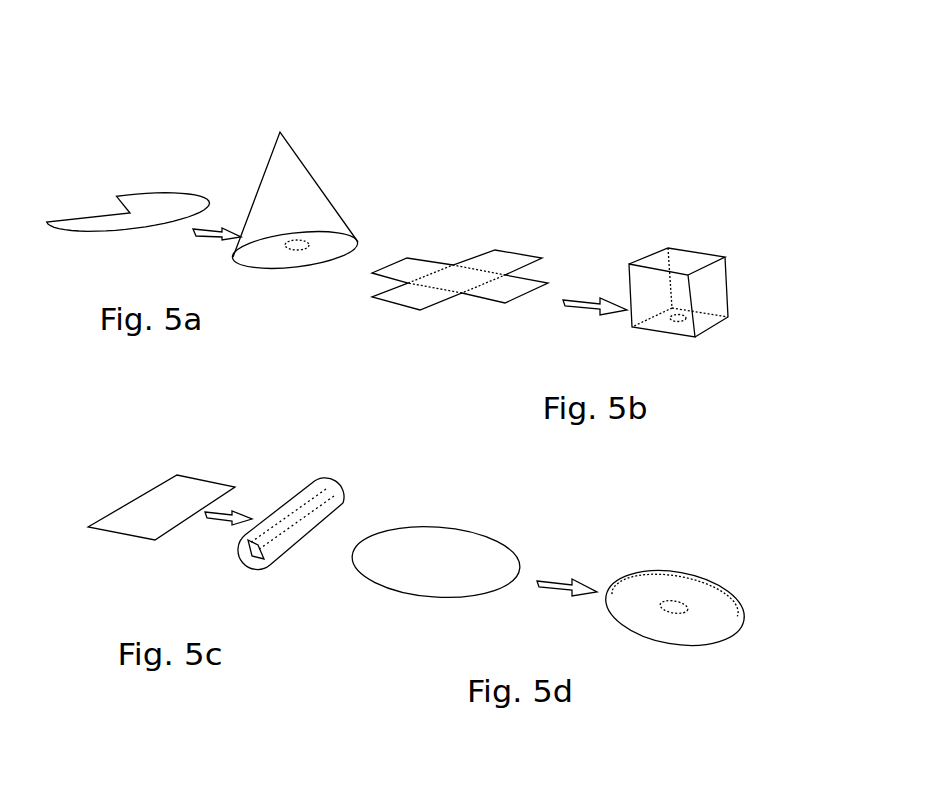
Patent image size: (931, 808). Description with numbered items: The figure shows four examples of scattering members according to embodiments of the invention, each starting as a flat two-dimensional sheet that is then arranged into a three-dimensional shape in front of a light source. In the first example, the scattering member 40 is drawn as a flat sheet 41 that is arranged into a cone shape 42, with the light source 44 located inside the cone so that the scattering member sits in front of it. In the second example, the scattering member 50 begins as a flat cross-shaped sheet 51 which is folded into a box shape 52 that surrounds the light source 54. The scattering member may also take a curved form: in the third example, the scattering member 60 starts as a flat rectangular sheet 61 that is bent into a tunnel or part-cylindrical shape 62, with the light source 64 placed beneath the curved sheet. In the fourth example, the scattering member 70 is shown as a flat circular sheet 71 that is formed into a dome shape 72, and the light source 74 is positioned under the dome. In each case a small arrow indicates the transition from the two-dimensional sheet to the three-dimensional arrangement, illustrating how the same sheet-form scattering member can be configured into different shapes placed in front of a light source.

In FIG. 5A, the scattering member 40 is at (360, 145).
In FIG. 5A, the flat fan-shaped blank 41 is at (138, 193).
In FIG. 5A, the cone shape 42 is at (300, 157).
In FIG. 5A, the light source 44 is at (303, 252).
In FIG. 5B, the scattering member 50 is at (762, 262).
In FIG. 5B, the flat cross-shaped blank 51 is at (472, 255).
In FIG. 5B, the box shape 52 is at (673, 247).
In FIG. 5B, the light source 54 is at (677, 322).
In FIG. 5C, the scattering member 60 is at (352, 510).
In FIG. 5C, the flat rectangular sheet 61 is at (185, 475).
In FIG. 5C, the tunnel or part-cylindrical shape 62 is at (313, 480).
In FIG. 5C, the light source 64 is at (257, 558).
In FIG. 5D, the scattering member 70 is at (768, 596).
In FIG. 5D, the flat disc 71 is at (488, 538).
In FIG. 5D, the dome shape 72 is at (645, 570).
In FIG. 5D, the light source 74 is at (672, 617).